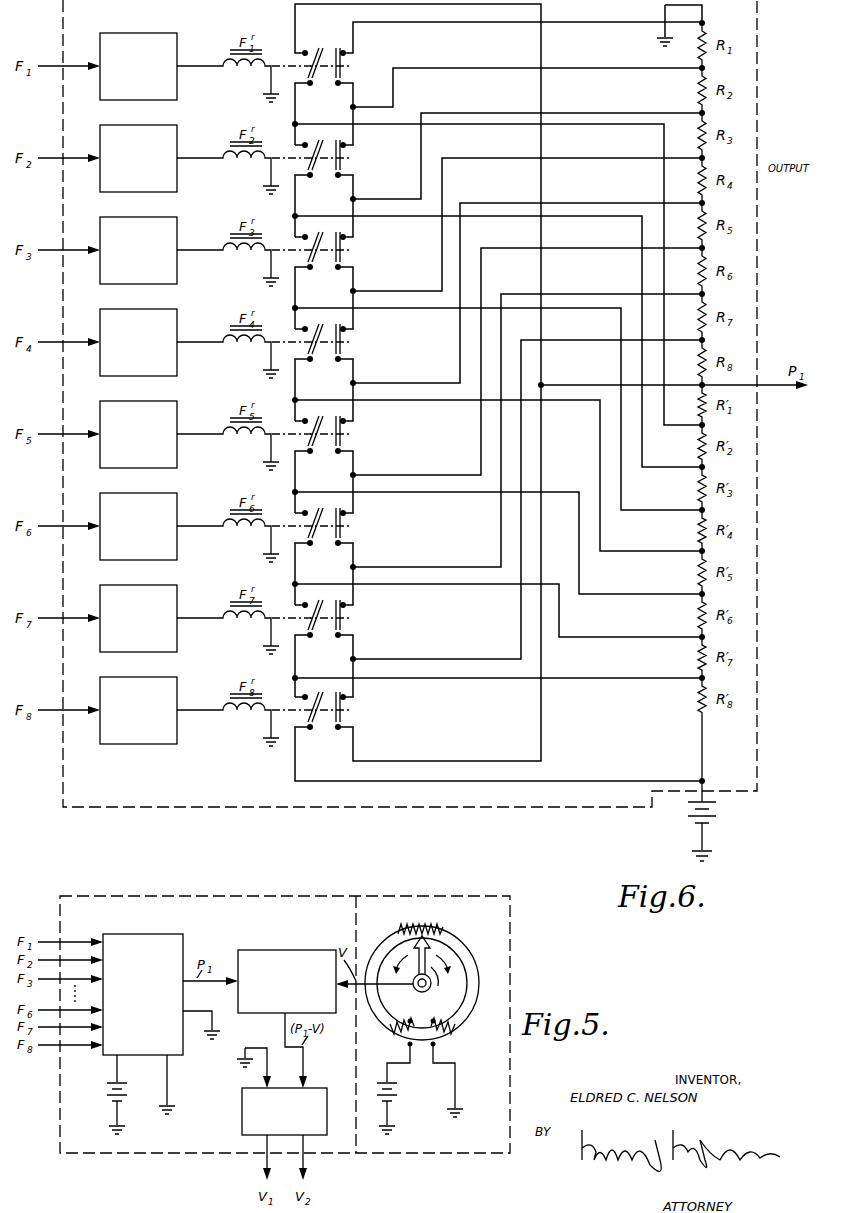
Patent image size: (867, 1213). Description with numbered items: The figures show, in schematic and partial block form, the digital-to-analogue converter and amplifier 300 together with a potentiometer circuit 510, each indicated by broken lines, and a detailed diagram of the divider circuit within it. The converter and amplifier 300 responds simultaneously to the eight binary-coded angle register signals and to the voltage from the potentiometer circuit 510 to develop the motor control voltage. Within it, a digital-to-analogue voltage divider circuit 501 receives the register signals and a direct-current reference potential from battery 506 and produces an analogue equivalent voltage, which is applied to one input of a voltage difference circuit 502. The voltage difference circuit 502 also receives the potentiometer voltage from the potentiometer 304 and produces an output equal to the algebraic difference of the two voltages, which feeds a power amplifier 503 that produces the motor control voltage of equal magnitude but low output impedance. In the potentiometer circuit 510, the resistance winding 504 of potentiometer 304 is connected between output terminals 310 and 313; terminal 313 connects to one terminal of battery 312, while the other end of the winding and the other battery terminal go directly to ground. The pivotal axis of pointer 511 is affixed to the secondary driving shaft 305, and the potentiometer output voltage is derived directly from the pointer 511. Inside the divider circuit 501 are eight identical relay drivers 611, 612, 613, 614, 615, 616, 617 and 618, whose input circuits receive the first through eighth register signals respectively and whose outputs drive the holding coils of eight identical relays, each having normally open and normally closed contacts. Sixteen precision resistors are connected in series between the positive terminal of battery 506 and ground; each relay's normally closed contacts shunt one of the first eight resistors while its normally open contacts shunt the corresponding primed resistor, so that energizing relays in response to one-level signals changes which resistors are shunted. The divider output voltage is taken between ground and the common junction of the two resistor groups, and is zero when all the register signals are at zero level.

In FIG. 6, the relay driver 611 is at (168, 33).
In FIG. 6, the relay driver 612 is at (172, 125).
In FIG. 6, the relay driver 613 is at (172, 217).
In FIG. 6, the relay driver 614 is at (172, 309).
In FIG. 6, the relay driver 615 is at (172, 401).
In FIG. 6, the relay driver 616 is at (172, 493).
In FIG. 6, the relay driver 617 is at (172, 585).
In FIG. 6, the relay driver 618 is at (172, 677).
In FIG. 6, the digital-to-analogue voltage divider circuit 501 is at (762, 23).
In FIG. 5, the digital-to-analogue voltage divider circuit 501 is at (167, 937).
In FIG. 6, the battery 506 is at (718, 810).
In FIG. 5, the battery 506 is at (110, 1086).
In FIG. 5, the digital-to-analogue converter and amplifier 300 is at (265, 896).
In FIG. 5, the potentiometer circuit 510 is at (448, 896).
In FIG. 5, the voltage difference circuit 502 is at (302, 950).
In FIG. 5, the power amplifier 503 is at (242, 1103).
In FIG. 5, the resistance winding 504 is at (416, 922).
In FIG. 5, the potentiometer 304 is at (500, 920).
In FIG. 5, the secondary driving shaft 305 is at (416, 992).
In FIG. 5, the pointer 511 is at (427, 966).
In FIG. 5, the output terminal 313 is at (405, 1046).
In FIG. 5, the output terminal 310 is at (437, 1046).
In FIG. 5, the battery 312 is at (396, 1100).